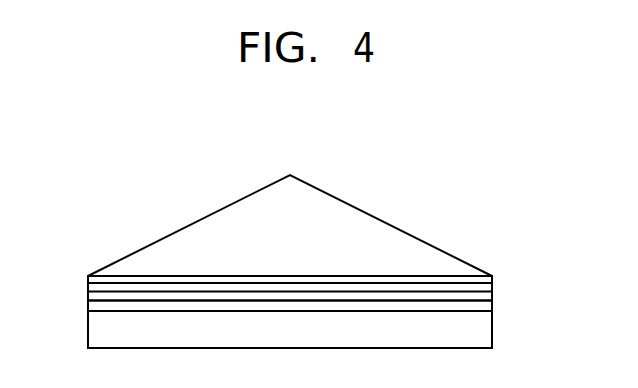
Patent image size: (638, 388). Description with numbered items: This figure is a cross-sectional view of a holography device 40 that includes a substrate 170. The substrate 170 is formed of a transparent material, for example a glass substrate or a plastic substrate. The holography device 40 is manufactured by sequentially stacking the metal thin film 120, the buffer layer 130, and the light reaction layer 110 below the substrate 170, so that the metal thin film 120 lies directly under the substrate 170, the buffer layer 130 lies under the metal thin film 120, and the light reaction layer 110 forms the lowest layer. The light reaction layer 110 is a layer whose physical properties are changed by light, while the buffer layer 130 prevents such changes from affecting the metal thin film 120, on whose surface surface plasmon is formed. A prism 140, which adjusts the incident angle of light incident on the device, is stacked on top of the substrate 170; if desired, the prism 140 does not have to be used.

The holography device 40 is at (98, 183).
The light reaction layer 110 is at (485, 338).
The metal thin film 120 is at (492, 292).
The buffer layer 130 is at (492, 308).
The prism 140 is at (403, 240).
The substrate 170 is at (492, 279).